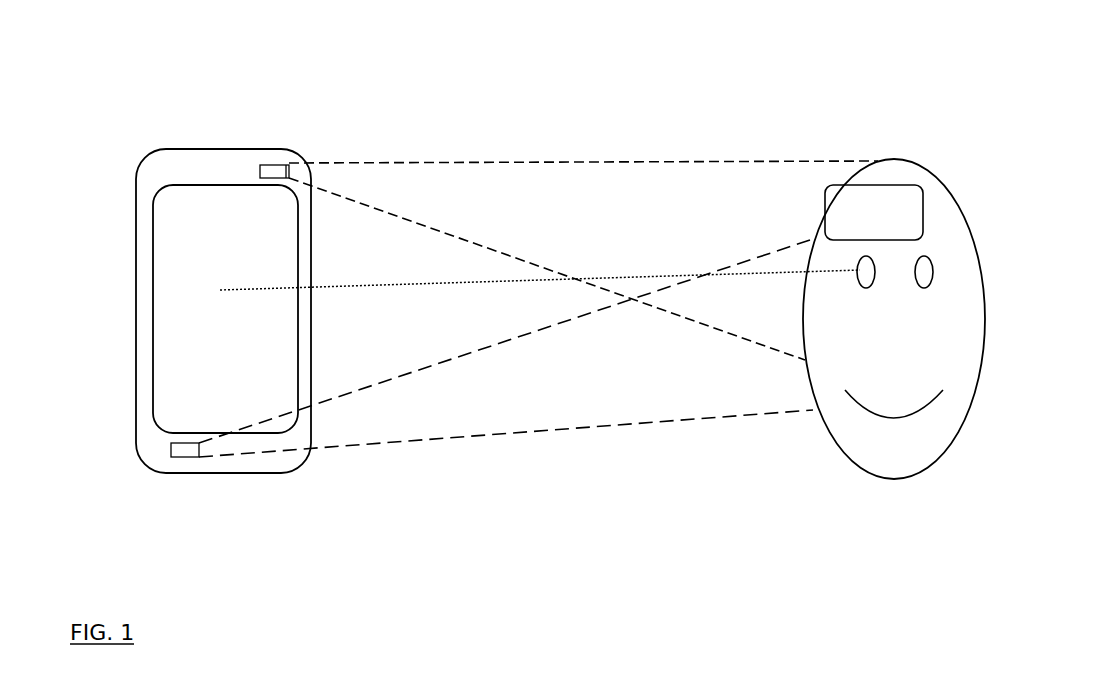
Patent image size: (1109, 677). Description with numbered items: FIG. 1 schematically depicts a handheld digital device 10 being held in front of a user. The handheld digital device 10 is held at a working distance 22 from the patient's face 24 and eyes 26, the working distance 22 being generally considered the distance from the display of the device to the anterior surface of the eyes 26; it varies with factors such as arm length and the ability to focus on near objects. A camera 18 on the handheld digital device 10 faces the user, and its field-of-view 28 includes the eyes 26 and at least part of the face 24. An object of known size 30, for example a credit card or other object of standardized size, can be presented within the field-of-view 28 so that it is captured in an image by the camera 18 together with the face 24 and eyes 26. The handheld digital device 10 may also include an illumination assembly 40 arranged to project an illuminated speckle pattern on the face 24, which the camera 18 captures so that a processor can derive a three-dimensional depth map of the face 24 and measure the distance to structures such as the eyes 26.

The handheld digital device 10 is at (156, 469).
The camera 18 is at (258, 165).
The working distance 22 is at (418, 285).
The face 24 is at (824, 423).
The eyes 26 is at (921, 288).
The field-of-view 28 is at (538, 165).
The object of known size 30 is at (830, 185).
The illumination assembly 40 is at (170, 455).